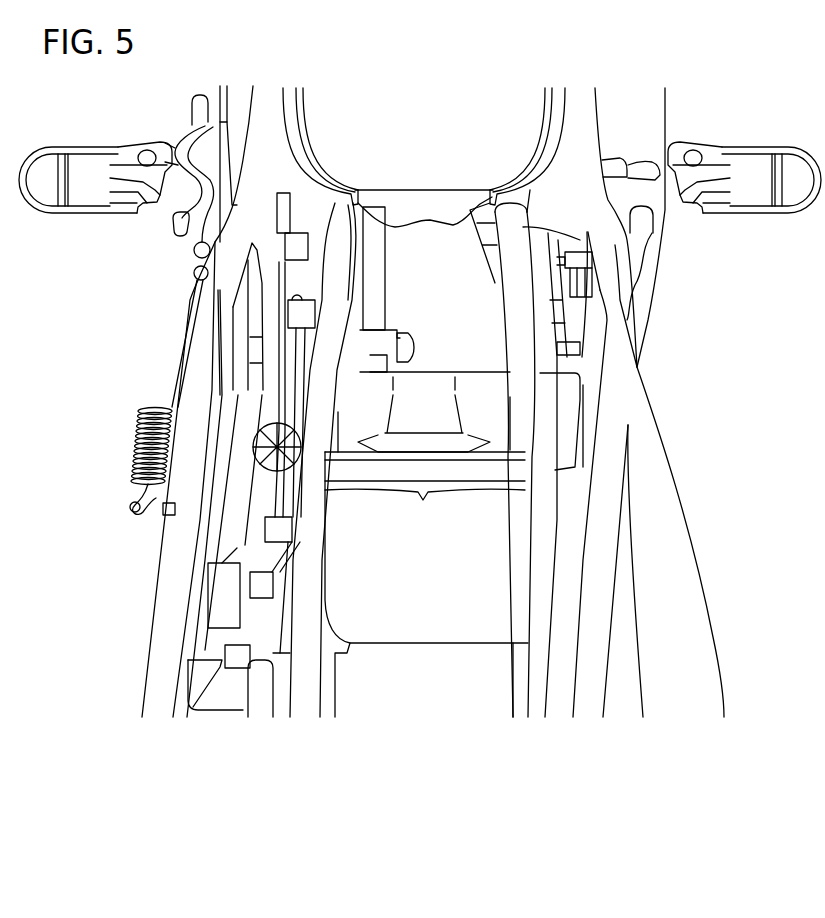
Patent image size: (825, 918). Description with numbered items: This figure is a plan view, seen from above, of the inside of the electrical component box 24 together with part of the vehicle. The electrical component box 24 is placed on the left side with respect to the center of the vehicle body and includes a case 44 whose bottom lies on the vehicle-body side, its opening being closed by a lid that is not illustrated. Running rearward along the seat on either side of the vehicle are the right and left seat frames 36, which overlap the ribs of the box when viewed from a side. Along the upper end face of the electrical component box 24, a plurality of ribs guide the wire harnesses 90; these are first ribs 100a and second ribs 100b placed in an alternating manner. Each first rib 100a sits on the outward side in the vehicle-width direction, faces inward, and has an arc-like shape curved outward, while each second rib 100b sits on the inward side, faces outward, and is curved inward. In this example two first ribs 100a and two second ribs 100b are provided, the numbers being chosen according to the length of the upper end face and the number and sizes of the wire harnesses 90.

The electrical component box 24 is at (187, 667).
The seat frame 36 is at (330, 372).
The case 44 is at (203, 647).
The wire harness 90 is at (278, 451).
The first rib 100a is at (298, 250).
The second rib 100b is at (300, 312).